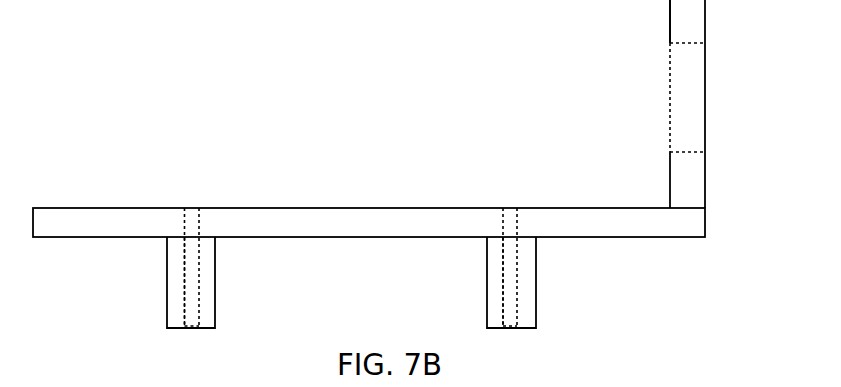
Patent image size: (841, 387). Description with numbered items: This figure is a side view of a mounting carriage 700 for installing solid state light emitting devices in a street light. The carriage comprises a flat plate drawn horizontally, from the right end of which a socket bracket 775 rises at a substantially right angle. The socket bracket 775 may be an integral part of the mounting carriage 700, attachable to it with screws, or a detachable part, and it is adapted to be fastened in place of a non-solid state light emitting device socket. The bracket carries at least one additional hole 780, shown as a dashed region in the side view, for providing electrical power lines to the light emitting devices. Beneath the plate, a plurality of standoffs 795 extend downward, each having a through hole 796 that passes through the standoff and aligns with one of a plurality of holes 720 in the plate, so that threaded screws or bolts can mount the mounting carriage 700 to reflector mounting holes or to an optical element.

The mounting carriage 700 is at (246, 38).
The holes 720 is at (199, 219).
The socket bracket 775 is at (670, 10).
The additional hole 780 is at (705, 98).
The standoffs 795 is at (216, 296).
The through holes 796 is at (199, 288).